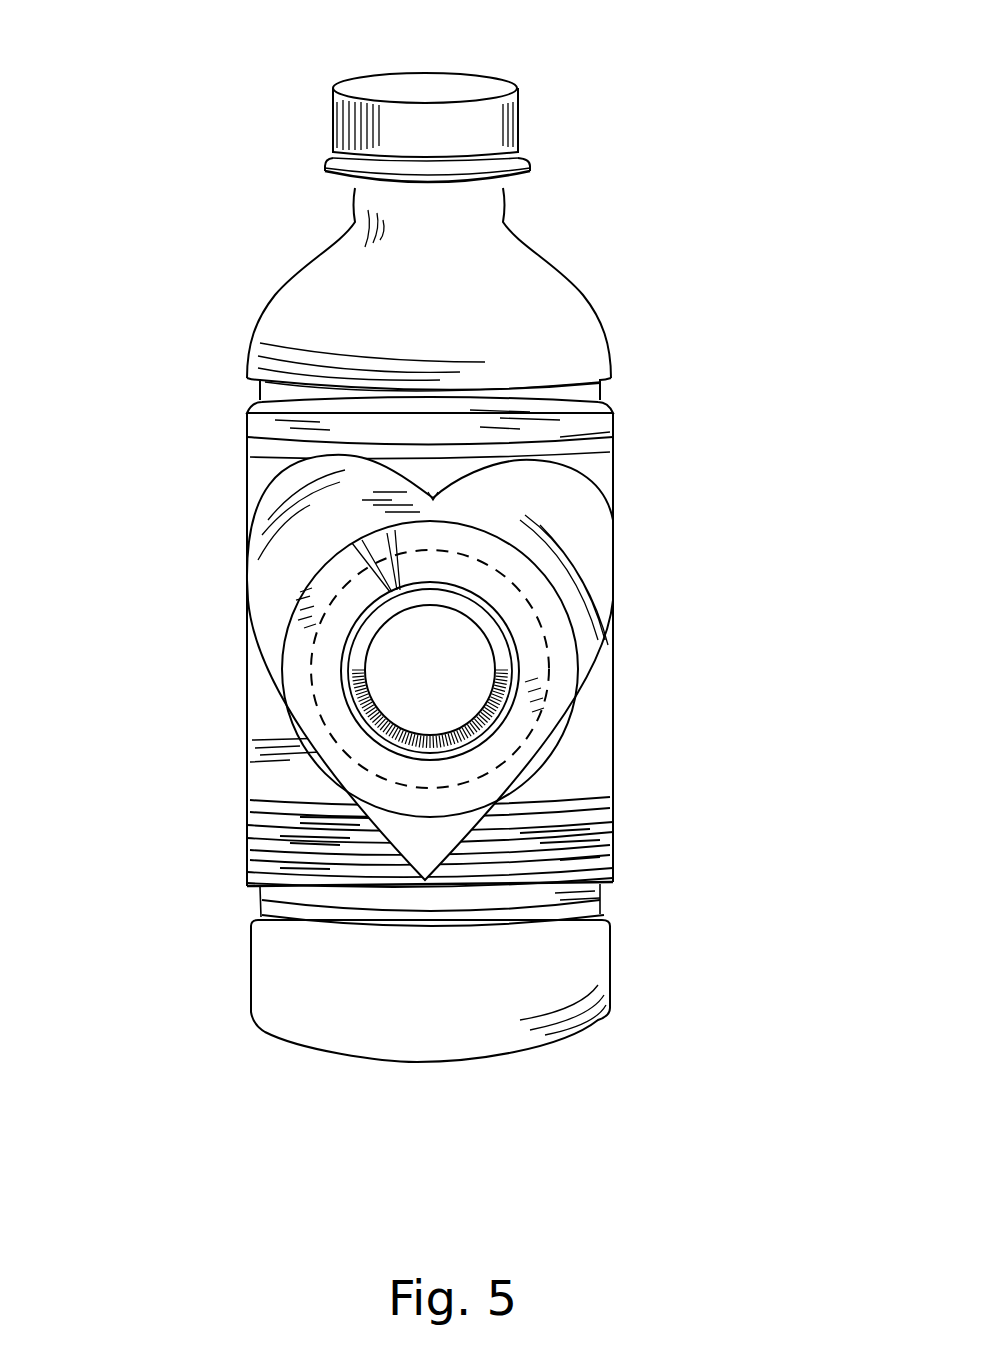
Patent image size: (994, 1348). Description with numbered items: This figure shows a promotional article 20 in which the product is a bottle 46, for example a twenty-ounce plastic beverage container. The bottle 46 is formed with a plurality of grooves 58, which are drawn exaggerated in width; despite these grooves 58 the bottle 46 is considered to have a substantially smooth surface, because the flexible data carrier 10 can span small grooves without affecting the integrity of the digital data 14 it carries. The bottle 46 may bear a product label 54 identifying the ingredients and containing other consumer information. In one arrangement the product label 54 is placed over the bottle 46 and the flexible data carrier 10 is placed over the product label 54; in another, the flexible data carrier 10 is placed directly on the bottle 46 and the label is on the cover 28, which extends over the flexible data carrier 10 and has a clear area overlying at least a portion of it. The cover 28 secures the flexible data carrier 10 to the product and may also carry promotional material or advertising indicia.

The promotional article 20 is at (614, 74).
The bottle 46 is at (273, 287).
The flexible data carrier 10 is at (572, 525).
The digital data 14 is at (563, 643).
The product label 54 is at (247, 747).
The grooves 58 is at (613, 808).
The cover 28 is at (500, 887).